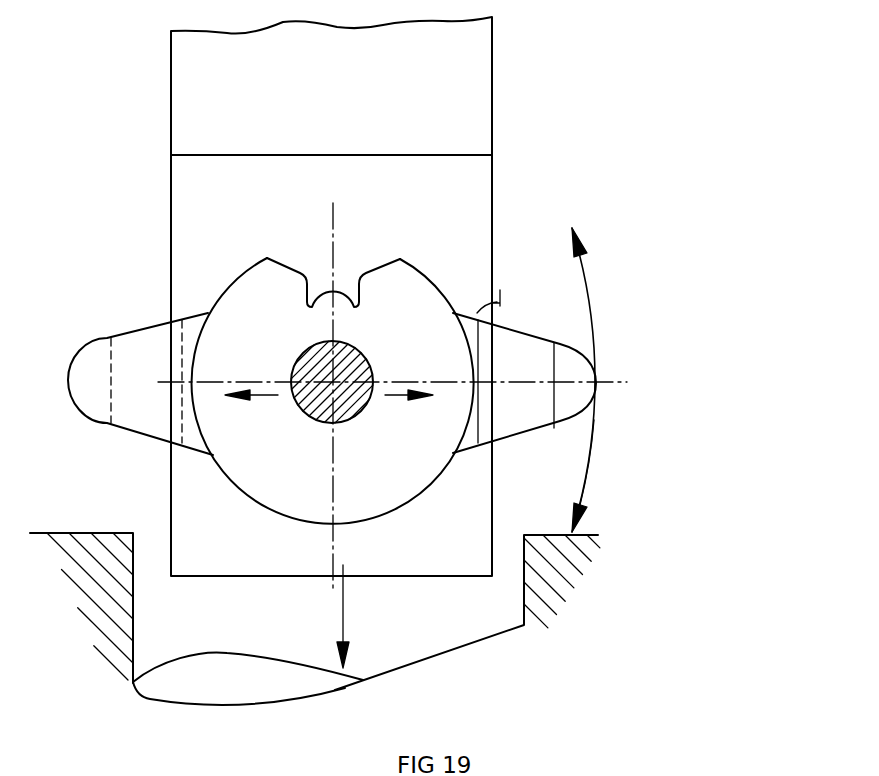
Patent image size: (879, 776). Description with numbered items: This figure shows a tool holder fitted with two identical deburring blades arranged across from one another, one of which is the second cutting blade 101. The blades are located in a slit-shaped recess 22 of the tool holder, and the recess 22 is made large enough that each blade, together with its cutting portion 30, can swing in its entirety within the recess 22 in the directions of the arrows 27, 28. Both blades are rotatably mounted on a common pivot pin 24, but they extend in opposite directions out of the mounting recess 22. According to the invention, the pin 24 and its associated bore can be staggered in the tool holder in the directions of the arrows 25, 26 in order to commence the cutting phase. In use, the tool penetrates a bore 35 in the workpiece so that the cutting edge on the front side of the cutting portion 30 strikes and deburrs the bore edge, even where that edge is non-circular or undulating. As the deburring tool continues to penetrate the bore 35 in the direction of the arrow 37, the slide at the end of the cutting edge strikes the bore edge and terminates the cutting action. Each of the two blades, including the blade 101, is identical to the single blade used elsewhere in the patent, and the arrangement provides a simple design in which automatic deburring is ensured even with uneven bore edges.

The slit-shaped recess 22 is at (453, 170).
The pivot pin 24 is at (352, 400).
The arrow 25 is at (279, 393).
The arrow 26 is at (404, 393).
The arrow 27 is at (592, 308).
The arrow 28 is at (592, 448).
The cutting portion 30 is at (143, 342).
The bore 35 is at (207, 637).
The arrow 37 is at (340, 600).
The cutting blade 101 is at (240, 458).